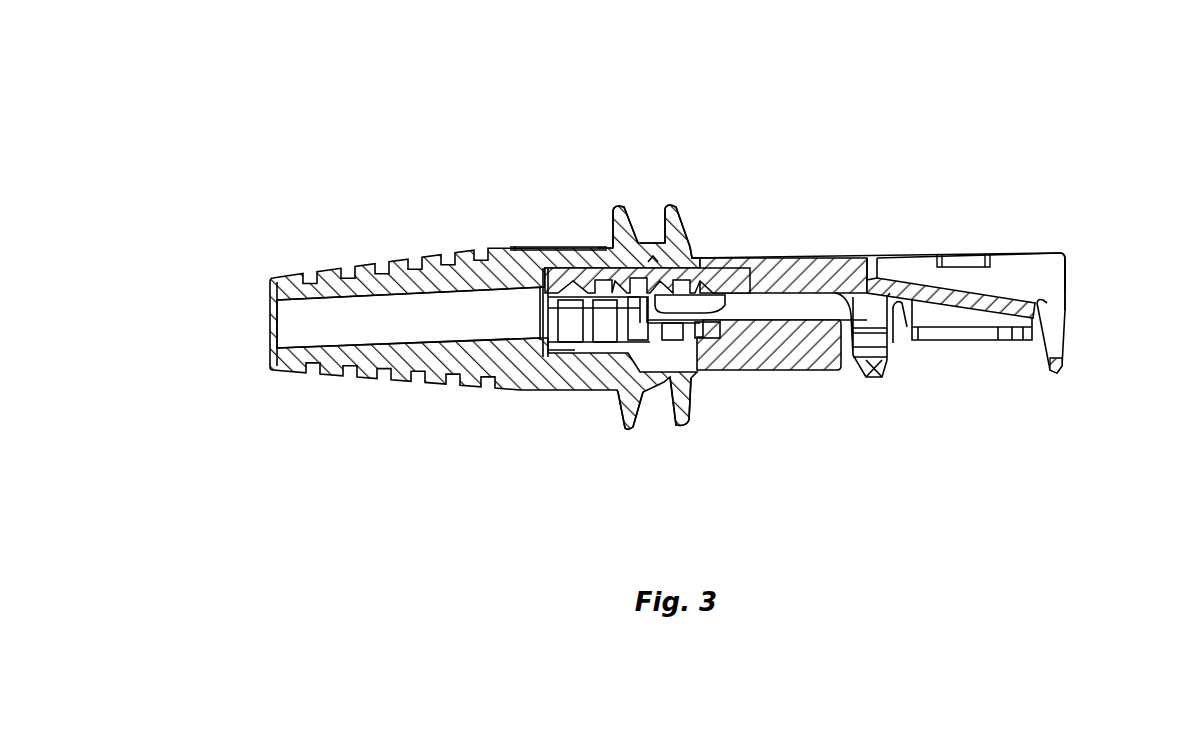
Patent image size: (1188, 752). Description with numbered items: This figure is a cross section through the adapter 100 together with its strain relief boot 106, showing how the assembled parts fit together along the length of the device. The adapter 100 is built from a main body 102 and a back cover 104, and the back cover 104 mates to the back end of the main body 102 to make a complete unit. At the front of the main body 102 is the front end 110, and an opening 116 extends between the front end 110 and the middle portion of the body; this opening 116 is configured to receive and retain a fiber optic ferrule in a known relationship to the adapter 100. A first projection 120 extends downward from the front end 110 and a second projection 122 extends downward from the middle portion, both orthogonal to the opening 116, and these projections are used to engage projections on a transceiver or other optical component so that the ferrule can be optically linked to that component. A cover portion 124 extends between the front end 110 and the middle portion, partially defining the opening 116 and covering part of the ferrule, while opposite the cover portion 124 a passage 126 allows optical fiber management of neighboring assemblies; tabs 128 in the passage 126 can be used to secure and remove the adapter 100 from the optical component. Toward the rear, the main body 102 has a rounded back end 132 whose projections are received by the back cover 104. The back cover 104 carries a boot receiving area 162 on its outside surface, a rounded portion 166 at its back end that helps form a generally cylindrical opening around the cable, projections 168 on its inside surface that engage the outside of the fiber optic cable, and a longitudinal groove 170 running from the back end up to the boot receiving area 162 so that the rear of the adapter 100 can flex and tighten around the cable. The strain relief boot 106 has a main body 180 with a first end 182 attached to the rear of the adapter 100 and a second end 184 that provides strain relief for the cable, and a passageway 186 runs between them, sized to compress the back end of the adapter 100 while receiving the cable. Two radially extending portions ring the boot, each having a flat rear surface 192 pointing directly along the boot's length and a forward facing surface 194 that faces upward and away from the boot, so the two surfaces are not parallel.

The adapter 100 is at (805, 142).
The main body 102 is at (914, 257).
The back cover 104 is at (778, 370).
The strain relief boot 106 is at (532, 378).
The front end 110 is at (1068, 290).
The opening 116 is at (955, 330).
The first projection 120 is at (1054, 373).
The second projection 122 is at (874, 378).
The cover portion 124 is at (1000, 297).
The passage 126 is at (1038, 254).
The tabs 128 is at (965, 255).
The rounded back end 132 is at (558, 262).
The boot receiving area 162 is at (661, 382).
The rounded portion 166 is at (600, 355).
The projections 168 is at (578, 350).
The longitudinal groove 170 is at (565, 345).
The main body 180 is at (502, 247).
The first end 182 is at (691, 250).
The second end 184 is at (270, 322).
The passageway 186 is at (420, 320).
The flat rear surface 192 is at (608, 220).
The forward facing surface 194 is at (633, 212).